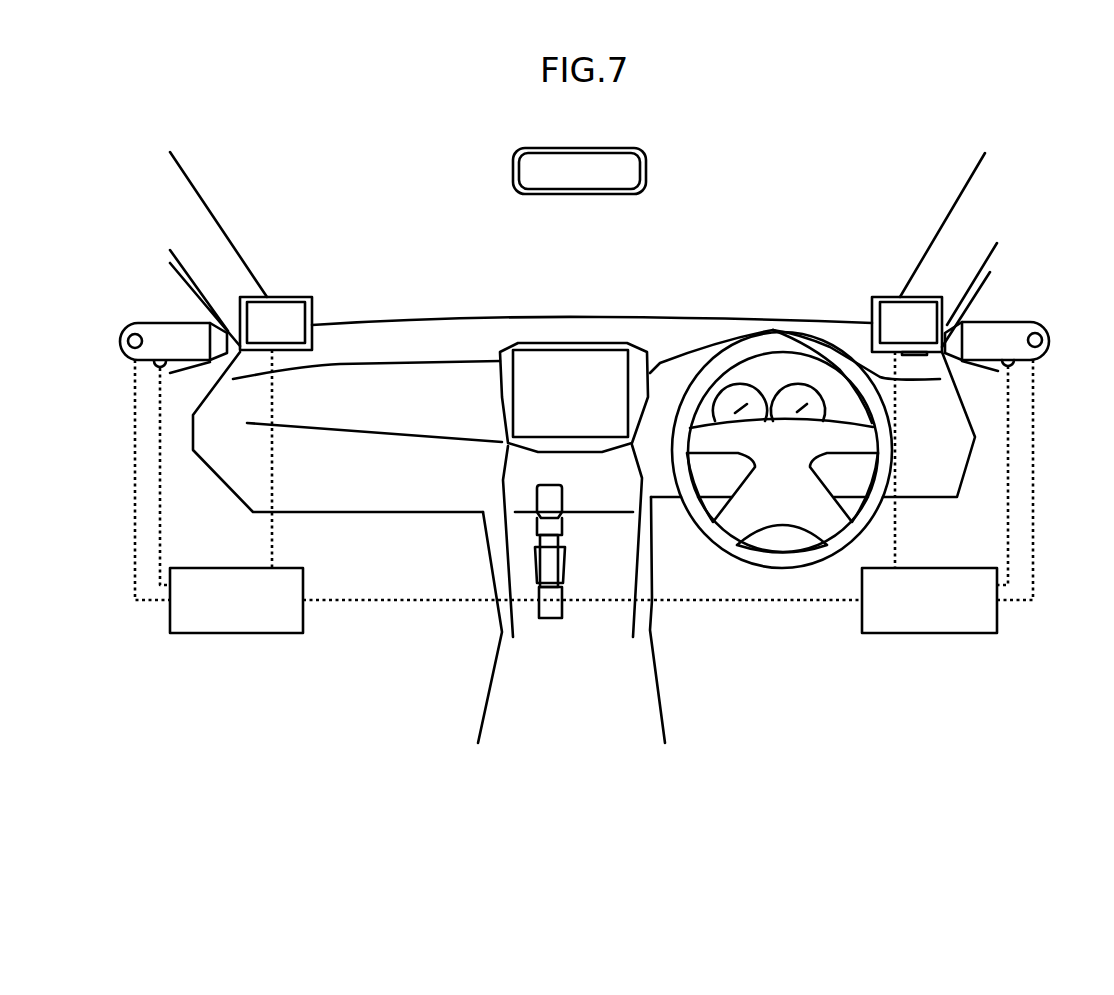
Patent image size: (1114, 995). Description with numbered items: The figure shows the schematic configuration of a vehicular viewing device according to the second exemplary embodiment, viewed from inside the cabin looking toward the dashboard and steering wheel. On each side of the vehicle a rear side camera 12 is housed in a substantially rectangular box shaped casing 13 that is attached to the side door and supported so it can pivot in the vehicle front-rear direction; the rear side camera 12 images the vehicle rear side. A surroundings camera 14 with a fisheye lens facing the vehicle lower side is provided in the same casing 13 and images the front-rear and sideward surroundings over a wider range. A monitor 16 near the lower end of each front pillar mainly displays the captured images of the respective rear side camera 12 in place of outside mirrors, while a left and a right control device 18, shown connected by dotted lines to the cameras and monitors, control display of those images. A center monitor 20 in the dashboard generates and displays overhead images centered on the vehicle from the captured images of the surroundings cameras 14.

The rear side camera 12 is at (132, 325).
The casing 13 is at (140, 322).
The surroundings camera 14 is at (163, 360).
The monitor 16 is at (285, 312).
The control device 18 is at (235, 633).
The center monitor 20 is at (557, 355).